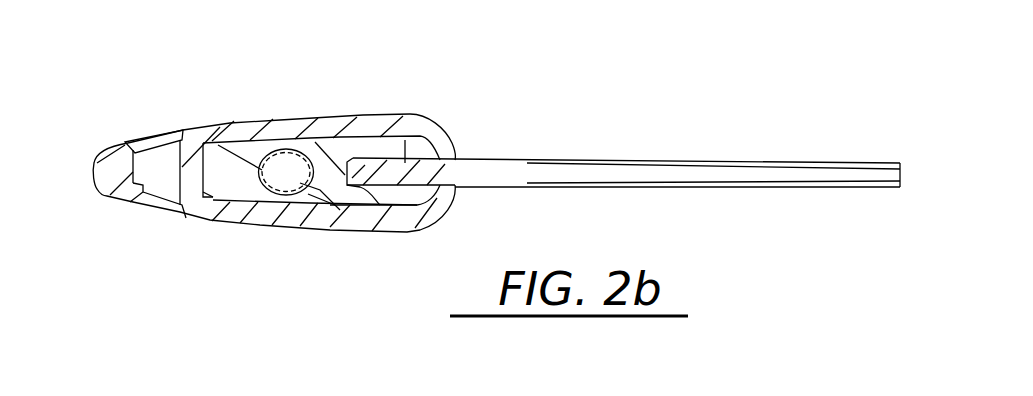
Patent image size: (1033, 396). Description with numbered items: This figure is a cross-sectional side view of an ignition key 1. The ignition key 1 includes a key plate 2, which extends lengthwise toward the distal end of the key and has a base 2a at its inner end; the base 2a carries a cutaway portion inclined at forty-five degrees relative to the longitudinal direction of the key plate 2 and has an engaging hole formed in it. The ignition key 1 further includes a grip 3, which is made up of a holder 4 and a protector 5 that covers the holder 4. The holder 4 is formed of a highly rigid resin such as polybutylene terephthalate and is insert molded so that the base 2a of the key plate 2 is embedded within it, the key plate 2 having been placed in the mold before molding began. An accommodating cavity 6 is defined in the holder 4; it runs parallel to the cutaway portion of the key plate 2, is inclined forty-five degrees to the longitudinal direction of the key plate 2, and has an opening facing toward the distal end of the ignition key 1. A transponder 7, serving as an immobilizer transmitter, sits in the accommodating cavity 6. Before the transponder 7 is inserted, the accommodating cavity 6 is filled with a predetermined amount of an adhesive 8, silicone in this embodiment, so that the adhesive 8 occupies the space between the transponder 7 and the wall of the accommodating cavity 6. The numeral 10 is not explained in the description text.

The ignition key 1 is at (497, 73).
The key plate 2 is at (497, 157).
The base 2a is at (420, 138).
The grip 3 is at (350, 84).
The holder 4 is at (363, 205).
The protector 5 is at (237, 120).
The accommodating cavity 6 is at (267, 203).
The transponder 7 is at (286, 150).
The adhesive 8 is at (312, 203).
The tip 10 is at (136, 205).